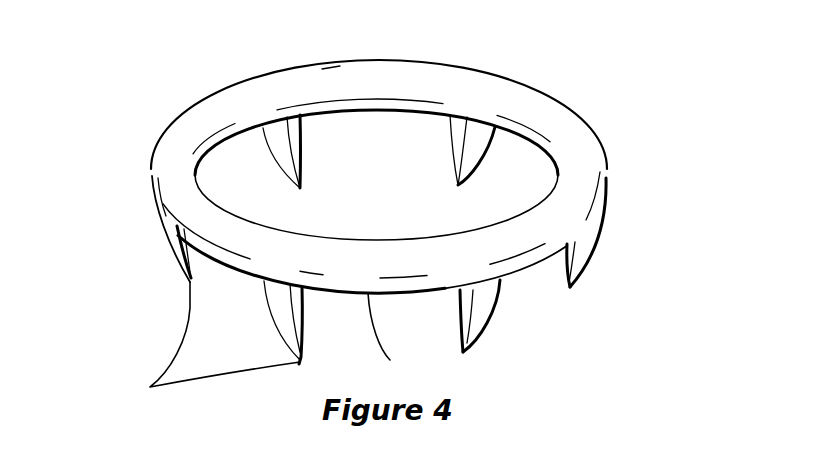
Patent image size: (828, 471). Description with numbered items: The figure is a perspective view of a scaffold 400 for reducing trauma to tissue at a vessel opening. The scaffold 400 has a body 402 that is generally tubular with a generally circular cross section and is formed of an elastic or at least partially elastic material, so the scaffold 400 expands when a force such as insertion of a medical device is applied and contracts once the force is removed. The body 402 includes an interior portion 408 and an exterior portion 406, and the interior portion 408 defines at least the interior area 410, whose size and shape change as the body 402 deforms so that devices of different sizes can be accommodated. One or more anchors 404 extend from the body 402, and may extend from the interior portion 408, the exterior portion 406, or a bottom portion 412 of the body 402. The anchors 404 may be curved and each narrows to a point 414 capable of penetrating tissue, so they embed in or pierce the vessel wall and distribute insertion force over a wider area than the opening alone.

The scaffold 400 is at (614, 103).
The body 402 is at (318, 83).
The anchors 404 is at (165, 237).
The exterior portion 406 is at (153, 173).
The interior portion 408 is at (197, 176).
The interior area 410 is at (398, 151).
The bottom portion 412 is at (392, 360).
The point 414 is at (457, 186).